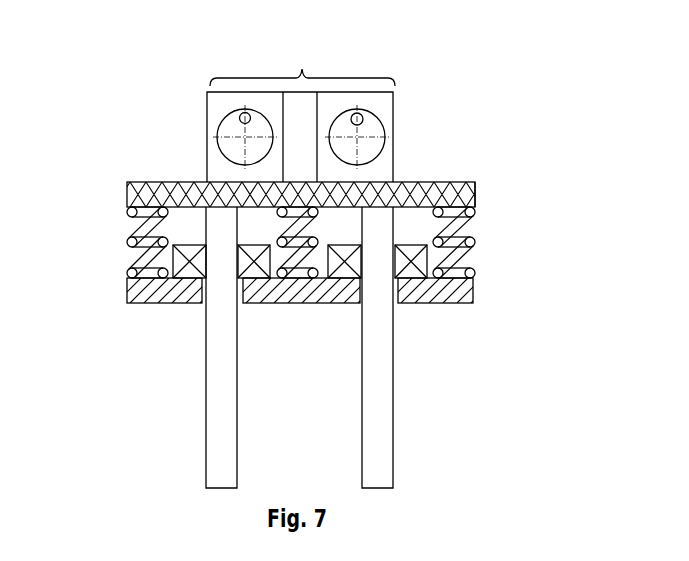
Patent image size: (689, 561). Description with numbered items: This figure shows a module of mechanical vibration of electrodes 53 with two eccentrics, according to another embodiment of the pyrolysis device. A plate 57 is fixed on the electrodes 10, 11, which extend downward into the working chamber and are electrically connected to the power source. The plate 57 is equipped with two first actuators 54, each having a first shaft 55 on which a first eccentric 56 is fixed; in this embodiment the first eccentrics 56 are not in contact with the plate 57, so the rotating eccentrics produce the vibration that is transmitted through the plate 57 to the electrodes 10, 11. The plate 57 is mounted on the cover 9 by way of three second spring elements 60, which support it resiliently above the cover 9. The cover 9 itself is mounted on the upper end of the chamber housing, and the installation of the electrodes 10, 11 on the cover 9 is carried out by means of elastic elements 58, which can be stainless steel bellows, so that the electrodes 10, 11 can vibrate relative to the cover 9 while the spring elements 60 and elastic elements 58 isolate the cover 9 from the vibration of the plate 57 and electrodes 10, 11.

The module of mechanical vibration of electrodes 53 is at (302, 68).
The first actuator 54 is at (271, 104).
The first shaft 55 is at (245, 118).
The first eccentric 56 is at (243, 151).
The plate 57 is at (176, 196).
The elastic element 58 is at (160, 243).
The cover 9 is at (150, 296).
The first electrode 11 is at (232, 363).
The electrode 10 is at (377, 433).
The second spring element 60 is at (478, 210).